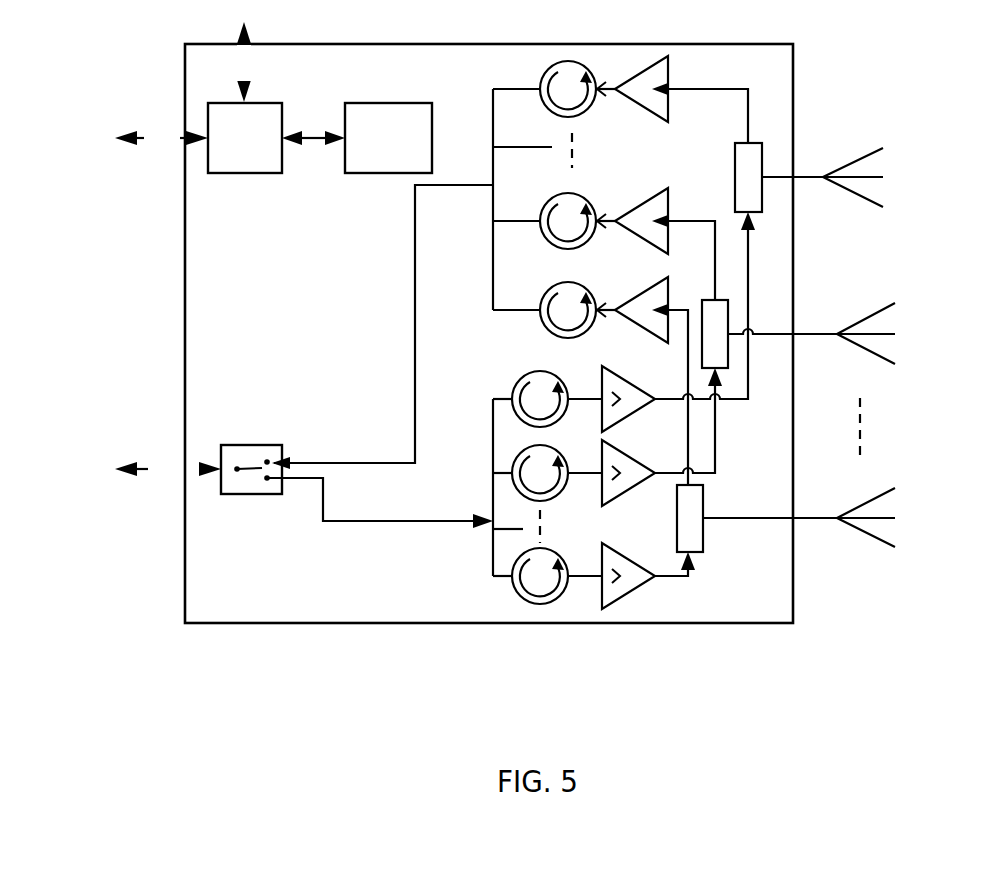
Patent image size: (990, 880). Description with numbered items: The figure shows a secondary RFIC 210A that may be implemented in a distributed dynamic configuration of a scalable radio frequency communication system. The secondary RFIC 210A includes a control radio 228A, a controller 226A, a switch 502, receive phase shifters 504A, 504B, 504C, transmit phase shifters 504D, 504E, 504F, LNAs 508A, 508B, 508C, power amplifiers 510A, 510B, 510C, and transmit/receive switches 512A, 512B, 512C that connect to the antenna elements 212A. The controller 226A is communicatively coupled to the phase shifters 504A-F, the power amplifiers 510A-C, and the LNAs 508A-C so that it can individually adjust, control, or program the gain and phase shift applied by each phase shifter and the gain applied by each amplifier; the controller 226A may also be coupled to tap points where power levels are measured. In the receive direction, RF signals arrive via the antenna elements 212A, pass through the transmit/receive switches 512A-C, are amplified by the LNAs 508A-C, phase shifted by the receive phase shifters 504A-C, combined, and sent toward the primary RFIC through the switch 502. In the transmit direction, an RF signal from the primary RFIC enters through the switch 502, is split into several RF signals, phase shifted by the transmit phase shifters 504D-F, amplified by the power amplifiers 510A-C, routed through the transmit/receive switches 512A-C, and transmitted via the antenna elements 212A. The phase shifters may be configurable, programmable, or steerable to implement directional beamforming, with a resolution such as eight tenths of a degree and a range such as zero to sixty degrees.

The secondary RFIC 210A is at (473, 44).
The control radio 228A is at (242, 173).
The controller 226A is at (387, 173).
The switch 502 is at (253, 445).
The receive phase shifter 504A is at (585, 108).
The receive phase shifter 504B is at (560, 245).
The receive phase shifter 504C is at (548, 333).
The transmit phase shifter 504D is at (519, 378).
The transmit phase shifter 504E is at (562, 495).
The transmit phase shifter 504F is at (513, 593).
The LNA 508A is at (655, 103).
The LNA 508B is at (670, 205).
The LNA 508C is at (648, 292).
The power amplifier 510A is at (638, 412).
The power amplifier 510B is at (633, 497).
The power amplifier 510C is at (650, 592).
The transmit/receive switch 512A is at (735, 165).
The transmit/receive switch 512B is at (702, 300).
The transmit/receive switch 512C is at (703, 497).
The antenna element 212A is at (872, 152).